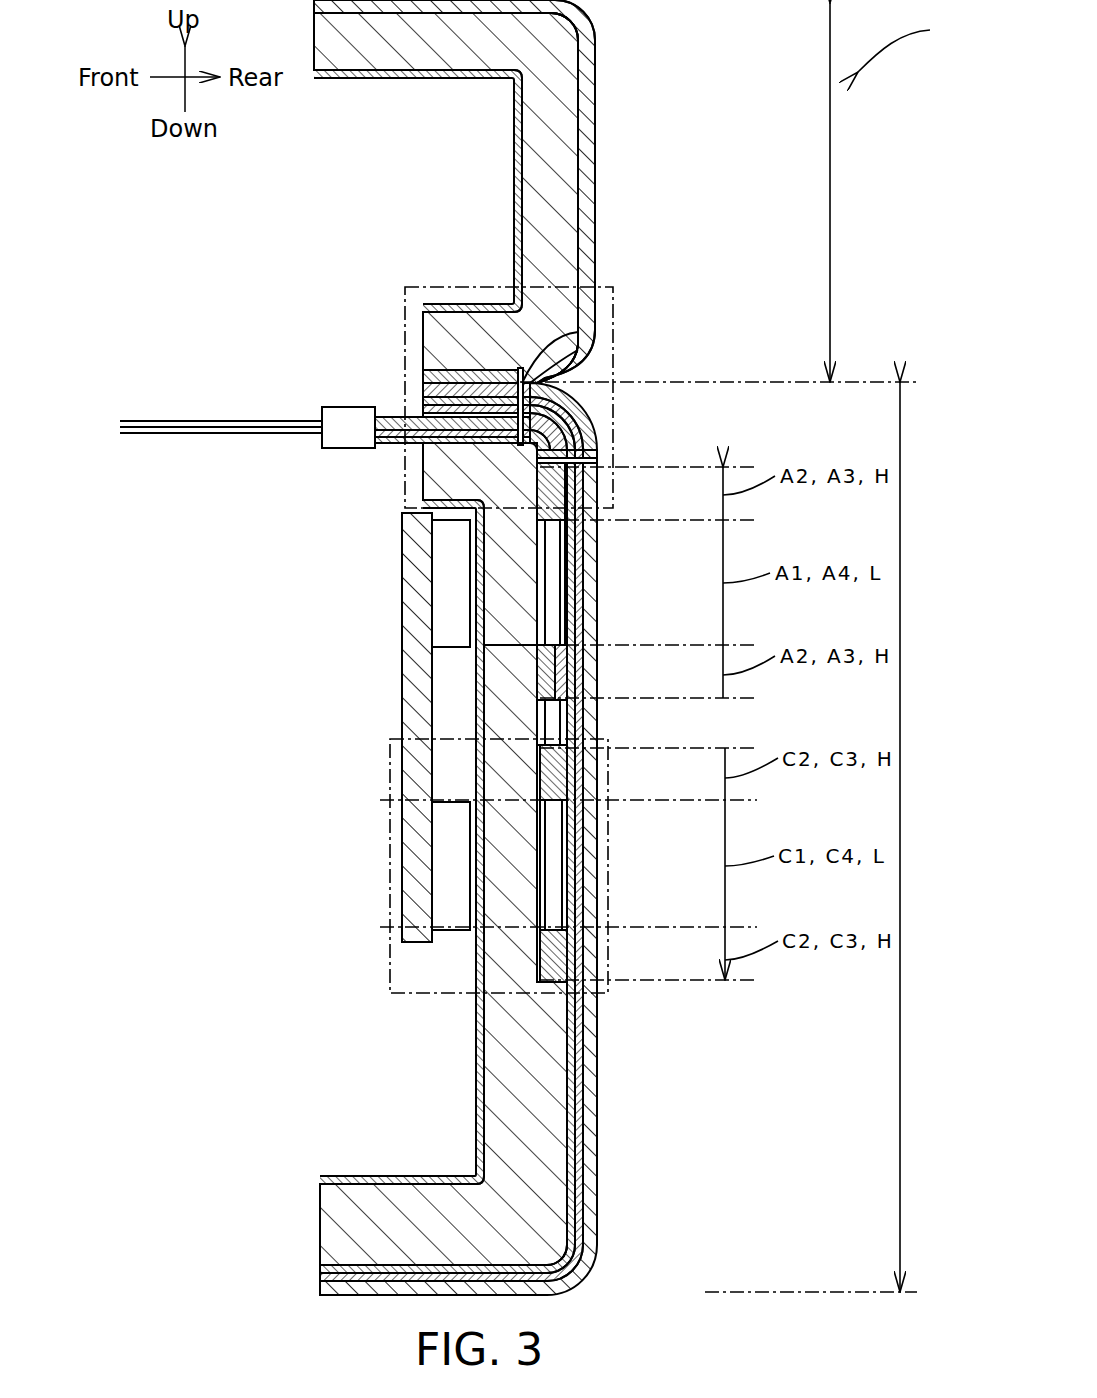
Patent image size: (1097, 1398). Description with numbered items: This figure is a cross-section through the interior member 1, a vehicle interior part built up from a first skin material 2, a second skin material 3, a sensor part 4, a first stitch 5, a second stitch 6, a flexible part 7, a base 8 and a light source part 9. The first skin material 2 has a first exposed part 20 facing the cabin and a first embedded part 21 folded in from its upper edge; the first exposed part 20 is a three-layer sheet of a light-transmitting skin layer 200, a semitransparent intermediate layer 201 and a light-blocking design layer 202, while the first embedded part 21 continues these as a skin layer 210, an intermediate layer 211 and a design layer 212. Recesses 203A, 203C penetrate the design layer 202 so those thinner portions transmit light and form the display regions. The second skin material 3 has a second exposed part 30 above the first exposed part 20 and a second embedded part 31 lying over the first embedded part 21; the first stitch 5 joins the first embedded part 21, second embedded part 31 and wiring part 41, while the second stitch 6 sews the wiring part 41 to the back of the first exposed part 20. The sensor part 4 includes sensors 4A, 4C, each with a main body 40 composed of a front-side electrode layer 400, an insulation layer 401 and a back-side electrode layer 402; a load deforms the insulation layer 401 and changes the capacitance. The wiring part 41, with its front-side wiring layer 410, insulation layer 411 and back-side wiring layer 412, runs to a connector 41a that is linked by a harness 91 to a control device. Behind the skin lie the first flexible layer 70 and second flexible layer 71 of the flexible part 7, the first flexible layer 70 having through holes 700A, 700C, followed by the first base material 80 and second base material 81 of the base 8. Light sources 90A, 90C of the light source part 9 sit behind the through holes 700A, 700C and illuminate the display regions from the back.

The interior member 1 is at (905, 46).
The first skin material 2 is at (900, 848).
The second skin material 3 is at (832, 185).
The sensor part 4 is at (522, 744).
The sensor 4A is at (600, 485).
The sensor 4C is at (500, 975).
The first stitch 5 is at (577, 345).
The second stitch 6 is at (600, 460).
The flexible part 7 is at (505, 1070).
The base 8 is at (470, 1140).
The light source part 9 is at (402, 720).
The first exposed part 20 is at (593, 1190).
The first embedded part 21 is at (485, 390).
The second exposed part 30 is at (588, 108).
The second embedded part 31 is at (470, 385).
The main body 40 is at (558, 735).
The wiring part 41 is at (600, 405).
The connector 41a is at (338, 452).
The first flexible layer 70 is at (500, 1025).
The second flexible layer 71 is at (537, 210).
The first base material 80 is at (480, 1095).
The second base material 81 is at (515, 162).
The light source 90A is at (440, 613).
The light source 90C is at (440, 830).
The harness 91 is at (200, 425).
The skin layer 200 is at (575, 1010).
The intermediate layer 201 is at (580, 1080).
The design layer 202 is at (585, 1130).
The recess 203A is at (580, 560).
The recess 203C is at (600, 910).
The skin layer 210 is at (445, 400).
The intermediate layer 211 is at (428, 408).
The design layer 212 is at (430, 415).
The front-side electrode layer 400 is at (580, 650).
The insulation layer 401 is at (558, 680).
The back-side electrode layer 402 is at (545, 672).
The front-side wiring layer 410 is at (425, 430).
The insulation layer 411 is at (420, 440).
The back-side wiring layer 412 is at (415, 448).
The through hole 700A is at (478, 580).
The through hole 700C is at (478, 832).